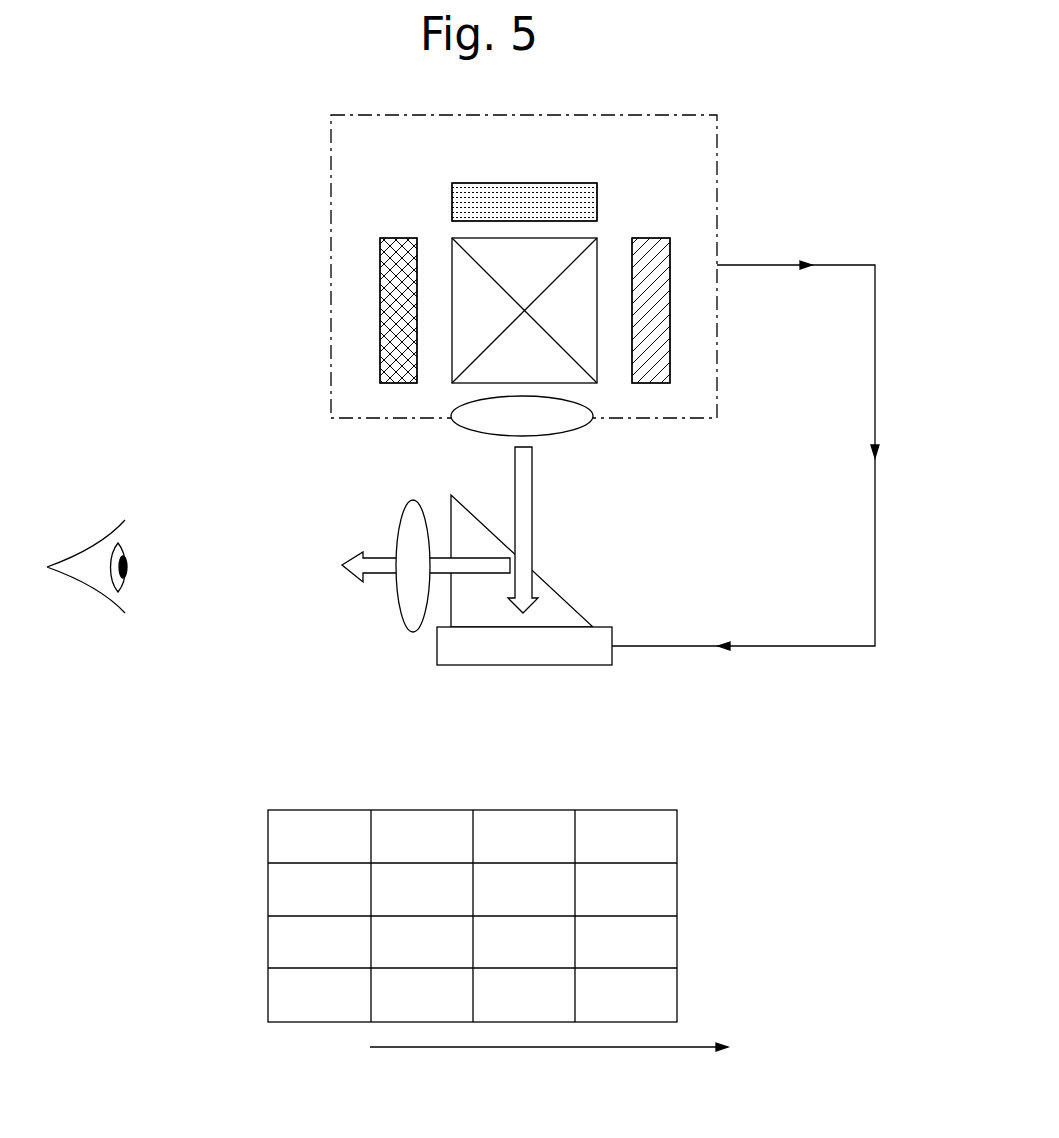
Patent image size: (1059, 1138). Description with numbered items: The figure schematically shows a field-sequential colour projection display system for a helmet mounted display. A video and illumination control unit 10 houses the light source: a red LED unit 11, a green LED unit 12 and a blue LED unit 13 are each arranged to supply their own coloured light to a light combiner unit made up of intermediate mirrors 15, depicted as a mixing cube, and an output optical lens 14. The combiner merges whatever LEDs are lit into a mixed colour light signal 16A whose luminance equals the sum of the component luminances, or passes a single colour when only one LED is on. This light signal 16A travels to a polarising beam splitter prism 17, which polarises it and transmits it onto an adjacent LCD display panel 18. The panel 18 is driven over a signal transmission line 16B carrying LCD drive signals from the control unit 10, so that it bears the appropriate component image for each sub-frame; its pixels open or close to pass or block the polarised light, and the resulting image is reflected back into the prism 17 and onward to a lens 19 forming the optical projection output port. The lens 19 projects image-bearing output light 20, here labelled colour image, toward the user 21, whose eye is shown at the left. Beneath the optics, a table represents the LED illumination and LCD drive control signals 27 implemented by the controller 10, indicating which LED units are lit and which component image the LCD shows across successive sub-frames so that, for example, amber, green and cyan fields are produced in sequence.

The video and illumination control unit 10 is at (717, 148).
The red LED unit 11 is at (380, 265).
The green LED unit 12 is at (670, 265).
The blue LED 13 is at (452, 200).
The output optical lens 14 is at (590, 425).
The intermediate mirrors 15 is at (597, 246).
The mixed colour light signal 16A is at (515, 470).
The signal transmission line 16B is at (875, 390).
The polarising beam splitter prism 17 is at (568, 600).
The LCD display panel 18 is at (568, 665).
The optical projection output port lens 19 is at (413, 632).
The image-bearing output light 20 is at (365, 574).
The user 21 is at (100, 537).
The LED illumination and LCD drive control signals 27 is at (677, 826).